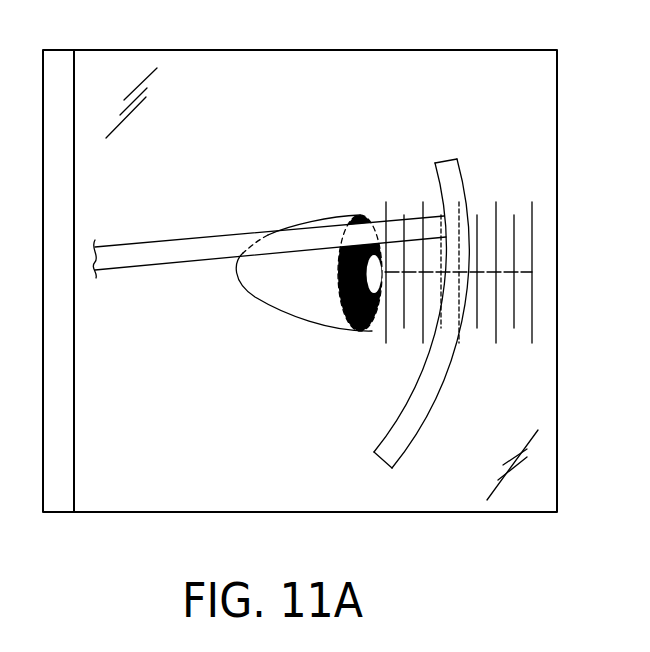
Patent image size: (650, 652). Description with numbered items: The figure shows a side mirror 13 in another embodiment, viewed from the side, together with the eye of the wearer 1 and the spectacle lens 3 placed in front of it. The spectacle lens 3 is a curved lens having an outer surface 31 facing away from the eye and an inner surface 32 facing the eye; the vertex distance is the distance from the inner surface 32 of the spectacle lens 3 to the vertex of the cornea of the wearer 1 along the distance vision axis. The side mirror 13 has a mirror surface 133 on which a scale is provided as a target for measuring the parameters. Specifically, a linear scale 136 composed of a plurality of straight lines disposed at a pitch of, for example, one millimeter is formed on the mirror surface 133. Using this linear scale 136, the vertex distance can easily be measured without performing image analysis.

The side mirror 13 is at (335, 50).
The mirror surface 133 is at (539, 82).
The linear scale 136 is at (499, 165).
The wearer 1 is at (303, 357).
The spectacle lens 3 is at (394, 300).
The outer surface 31 is at (415, 437).
The inner surface 32 is at (387, 427).